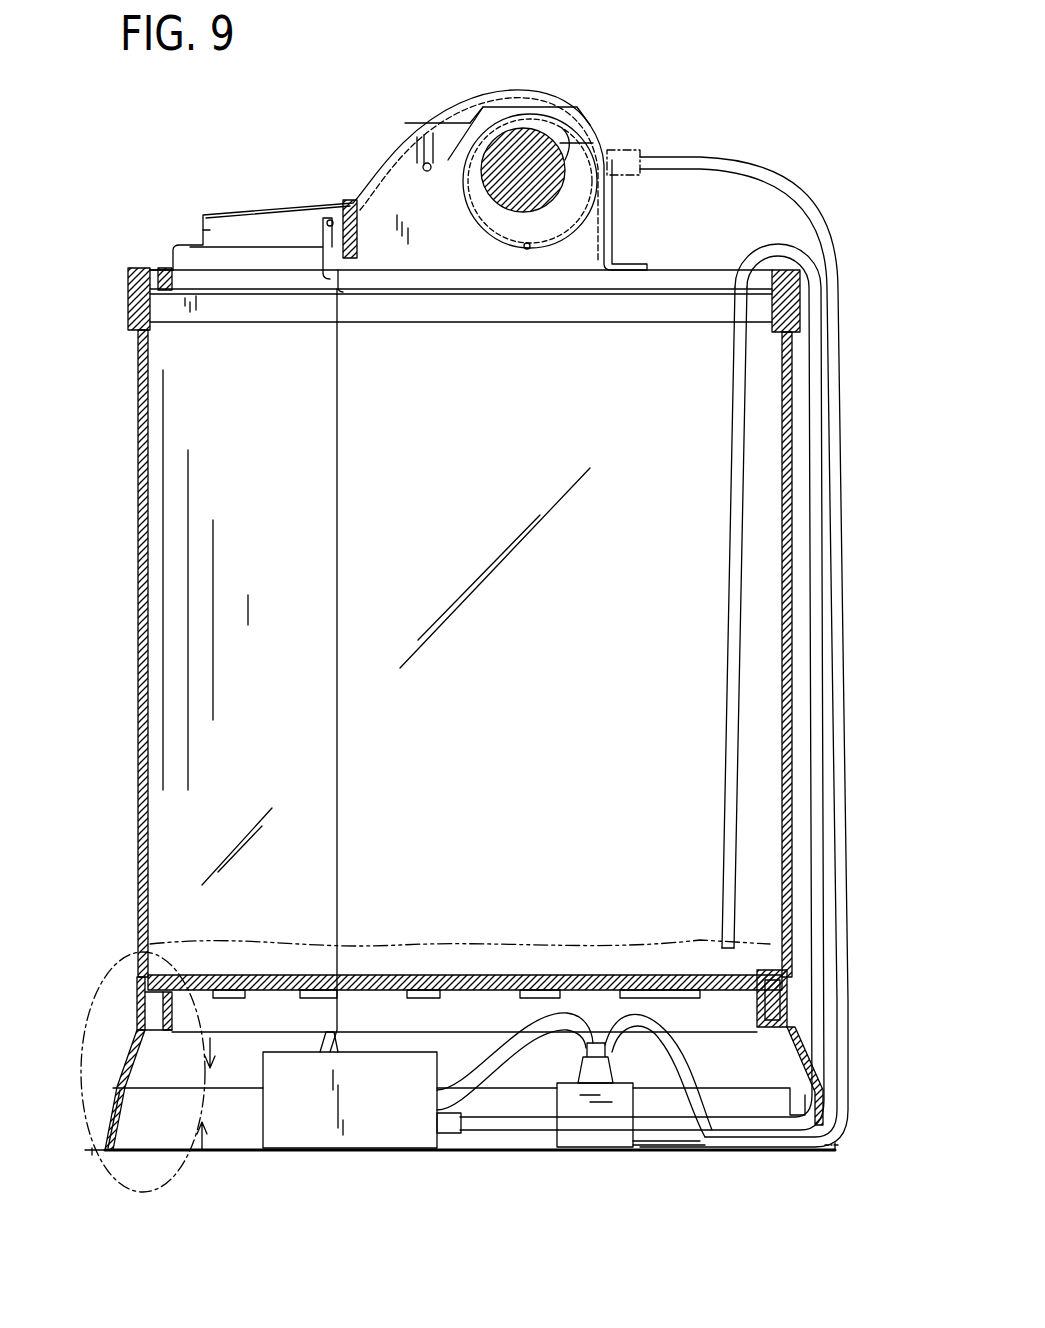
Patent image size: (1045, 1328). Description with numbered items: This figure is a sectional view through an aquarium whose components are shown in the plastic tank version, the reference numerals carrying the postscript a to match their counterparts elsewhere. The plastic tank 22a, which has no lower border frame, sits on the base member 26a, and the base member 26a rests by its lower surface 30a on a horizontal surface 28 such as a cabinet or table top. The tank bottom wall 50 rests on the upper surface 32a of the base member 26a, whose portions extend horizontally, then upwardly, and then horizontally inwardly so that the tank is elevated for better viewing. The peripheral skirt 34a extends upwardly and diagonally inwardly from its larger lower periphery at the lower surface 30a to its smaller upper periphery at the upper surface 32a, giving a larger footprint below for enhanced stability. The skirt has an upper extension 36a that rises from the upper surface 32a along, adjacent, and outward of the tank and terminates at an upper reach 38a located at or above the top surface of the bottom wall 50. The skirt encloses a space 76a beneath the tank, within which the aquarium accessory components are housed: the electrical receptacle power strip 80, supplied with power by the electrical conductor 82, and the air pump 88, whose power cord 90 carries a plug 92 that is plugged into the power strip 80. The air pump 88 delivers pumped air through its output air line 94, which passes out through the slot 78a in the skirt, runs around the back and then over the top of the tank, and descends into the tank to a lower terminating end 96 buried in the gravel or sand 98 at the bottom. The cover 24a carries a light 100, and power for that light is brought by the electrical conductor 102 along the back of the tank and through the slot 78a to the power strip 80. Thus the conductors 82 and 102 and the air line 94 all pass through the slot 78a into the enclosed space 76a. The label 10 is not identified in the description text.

The detail view indicator 10 is at (162, 1072).
The plastic tank 22a is at (137, 638).
The cover 24a is at (410, 180).
The base member 26a is at (120, 1077).
The horizontal surface 28 is at (92, 1158).
The lower surface 30a is at (113, 1158).
The upper surface 32a is at (168, 1030).
The peripheral skirt 34a is at (112, 1118).
The upper extension 36a is at (137, 1000).
The upper reach 38a is at (138, 995).
The bottom wall 50 is at (200, 990).
The space 76a is at (250, 1150).
The slot 78a is at (822, 1100).
The electrical receptacle power strip 80 is at (600, 1142).
The electrical conductor 82 is at (832, 1152).
The air pump 88 is at (386, 1148).
The power cord 90 is at (500, 1082).
The plug 92 is at (582, 1078).
The air line 94 is at (730, 580).
The lower terminating end 96 is at (718, 944).
The gravel or sand 98 is at (600, 945).
The light 100 is at (547, 142).
The electrical conductor 102 is at (735, 172).